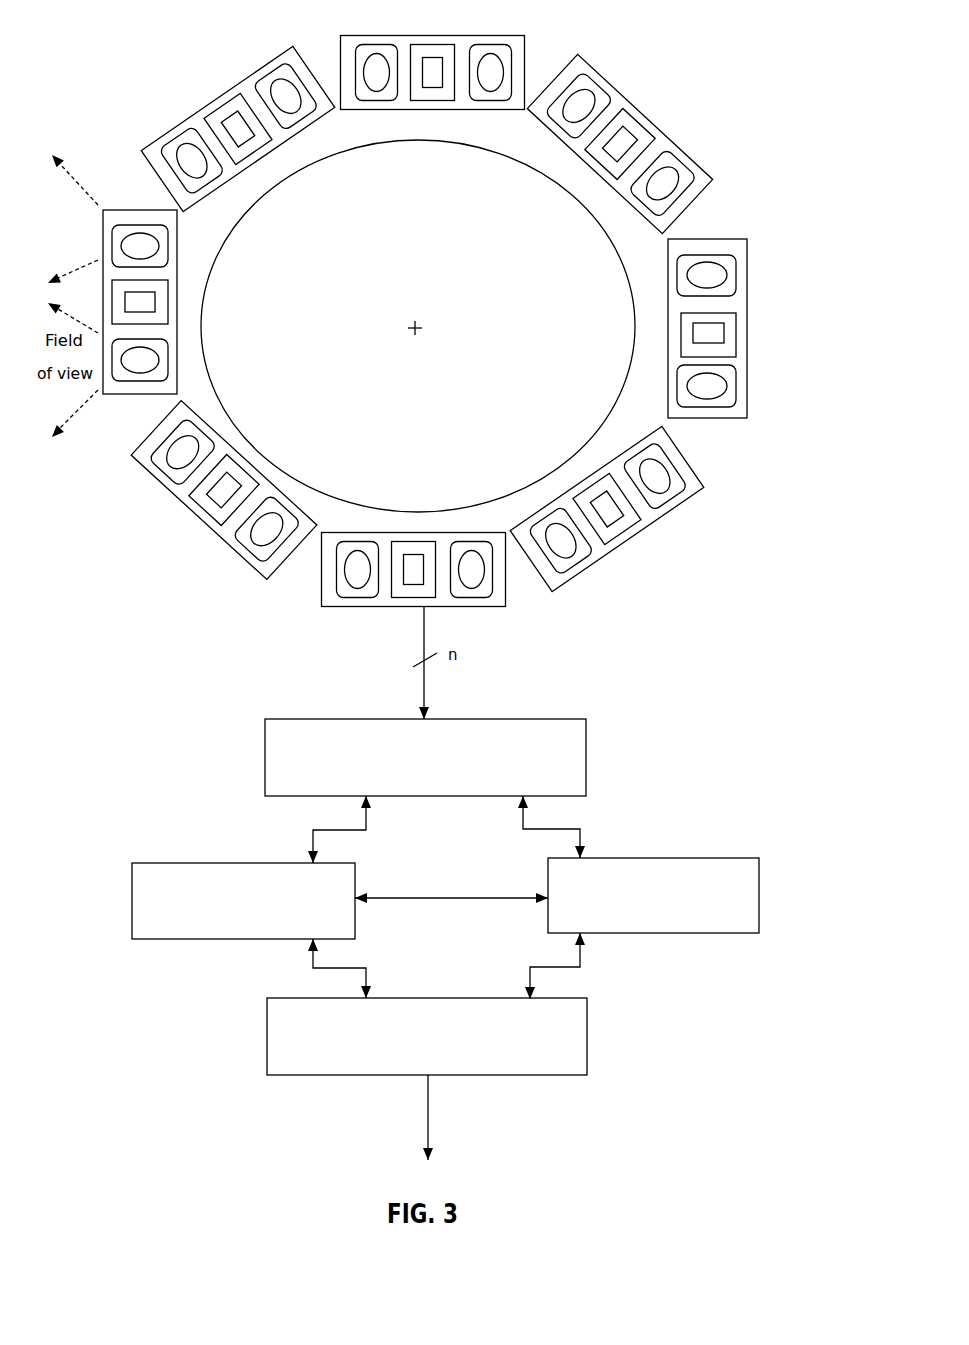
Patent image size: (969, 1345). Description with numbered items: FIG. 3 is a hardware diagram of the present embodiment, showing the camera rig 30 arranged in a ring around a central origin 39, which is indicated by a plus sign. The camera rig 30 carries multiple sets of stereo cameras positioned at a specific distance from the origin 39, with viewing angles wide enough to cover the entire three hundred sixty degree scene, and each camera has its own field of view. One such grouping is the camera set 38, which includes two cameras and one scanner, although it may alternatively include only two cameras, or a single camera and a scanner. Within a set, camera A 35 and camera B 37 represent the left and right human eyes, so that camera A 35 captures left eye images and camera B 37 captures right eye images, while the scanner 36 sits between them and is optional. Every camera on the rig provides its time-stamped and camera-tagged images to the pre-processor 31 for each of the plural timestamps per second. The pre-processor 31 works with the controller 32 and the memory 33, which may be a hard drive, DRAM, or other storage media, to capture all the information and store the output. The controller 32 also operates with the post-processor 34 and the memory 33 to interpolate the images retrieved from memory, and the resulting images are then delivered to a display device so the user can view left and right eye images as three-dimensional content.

The camera rig 30 is at (475, 321).
The pre-processor 31 is at (425, 757).
The controller 32 is at (243, 901).
The memory 33 is at (653, 895).
The post-processor 34 is at (427, 1036).
The camera A 35 is at (715, 272).
The scanner 36 is at (728, 343).
The camera B 37 is at (700, 397).
The camera set 38 is at (662, 518).
The origin 39 is at (417, 356).